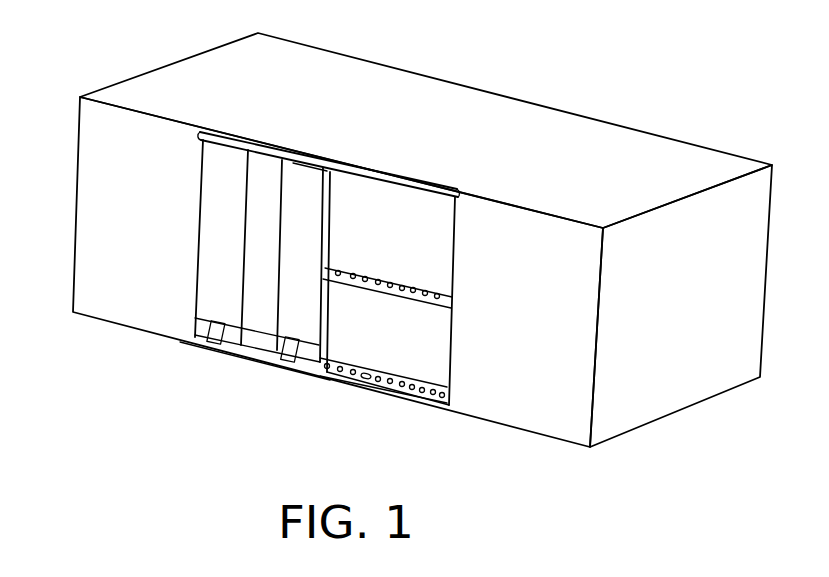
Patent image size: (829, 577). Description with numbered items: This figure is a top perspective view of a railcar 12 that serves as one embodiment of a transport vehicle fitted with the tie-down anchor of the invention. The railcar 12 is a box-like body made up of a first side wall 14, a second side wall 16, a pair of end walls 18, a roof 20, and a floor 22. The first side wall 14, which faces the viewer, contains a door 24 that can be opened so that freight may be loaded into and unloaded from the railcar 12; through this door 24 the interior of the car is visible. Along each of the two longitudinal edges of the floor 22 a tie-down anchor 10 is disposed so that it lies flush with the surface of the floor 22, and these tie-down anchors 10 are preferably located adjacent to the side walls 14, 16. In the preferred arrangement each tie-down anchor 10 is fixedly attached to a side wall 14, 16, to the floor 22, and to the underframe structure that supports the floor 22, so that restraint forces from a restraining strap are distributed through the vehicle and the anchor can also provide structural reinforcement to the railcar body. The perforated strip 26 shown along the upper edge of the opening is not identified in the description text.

The railcar 12 is at (84, 69).
The first side wall 14 is at (135, 304).
The second side wall 16 is at (390, 234).
The end walls 18 is at (688, 388).
The roof 20 is at (581, 136).
The floor 22 is at (433, 359).
The door 24 is at (229, 176).
The upper perforated strip 26 is at (338, 278).
The tie-down anchor 10 is at (417, 297).